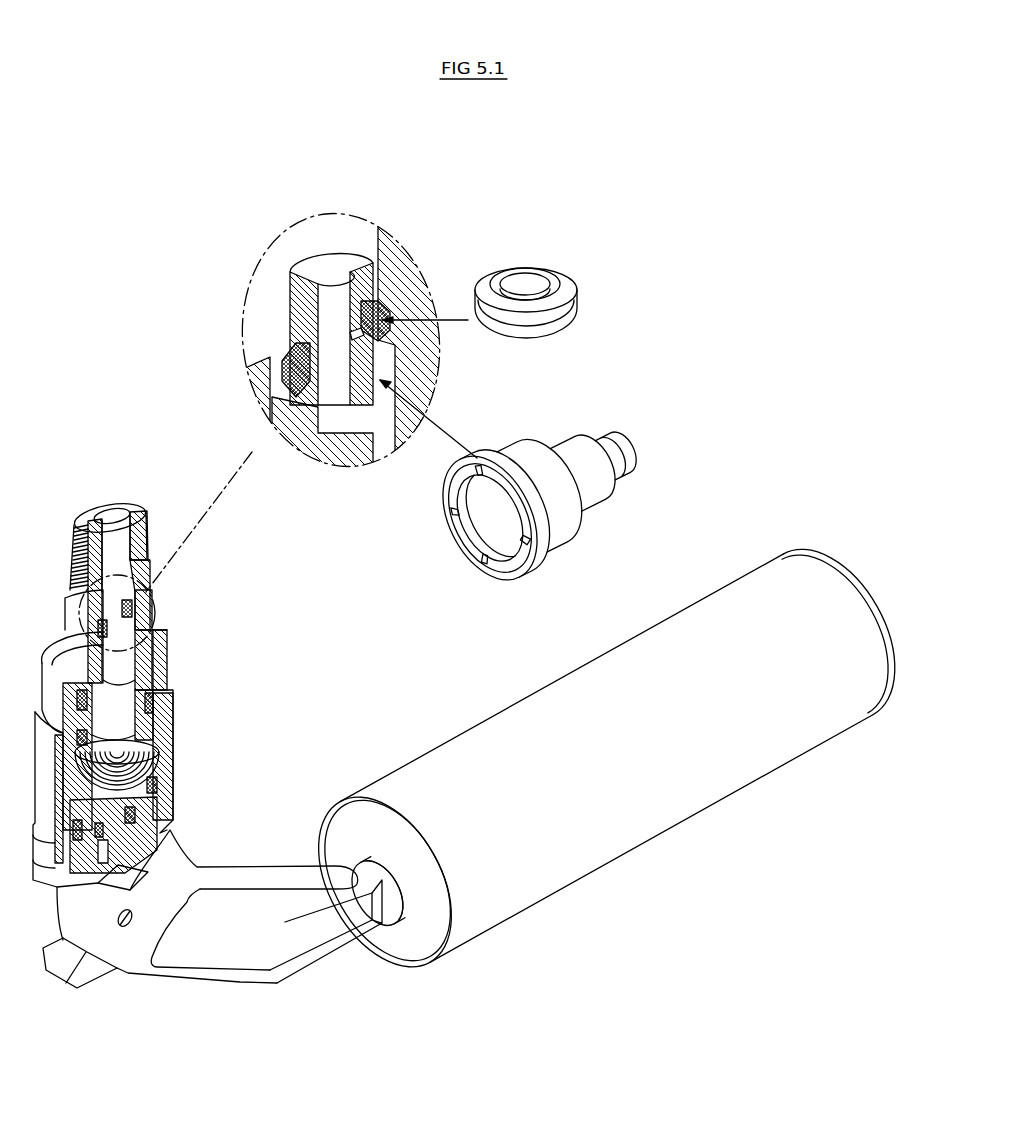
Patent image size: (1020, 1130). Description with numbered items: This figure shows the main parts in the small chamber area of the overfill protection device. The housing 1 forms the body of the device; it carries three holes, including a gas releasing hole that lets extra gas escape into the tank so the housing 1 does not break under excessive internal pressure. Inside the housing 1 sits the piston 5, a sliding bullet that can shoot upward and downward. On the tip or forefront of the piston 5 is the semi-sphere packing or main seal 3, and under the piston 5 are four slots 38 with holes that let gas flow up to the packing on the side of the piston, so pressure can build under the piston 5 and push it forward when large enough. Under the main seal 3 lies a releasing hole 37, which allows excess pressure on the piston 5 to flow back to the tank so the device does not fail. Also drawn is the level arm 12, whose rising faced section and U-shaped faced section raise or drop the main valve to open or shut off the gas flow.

The housing 1 is at (400, 244).
The main seal or semi-sphere packing 3 is at (583, 313).
The releasing hole 37 is at (358, 338).
The piston 5 is at (613, 488).
The slots 38 is at (475, 570).
The level arm 12 is at (235, 960).